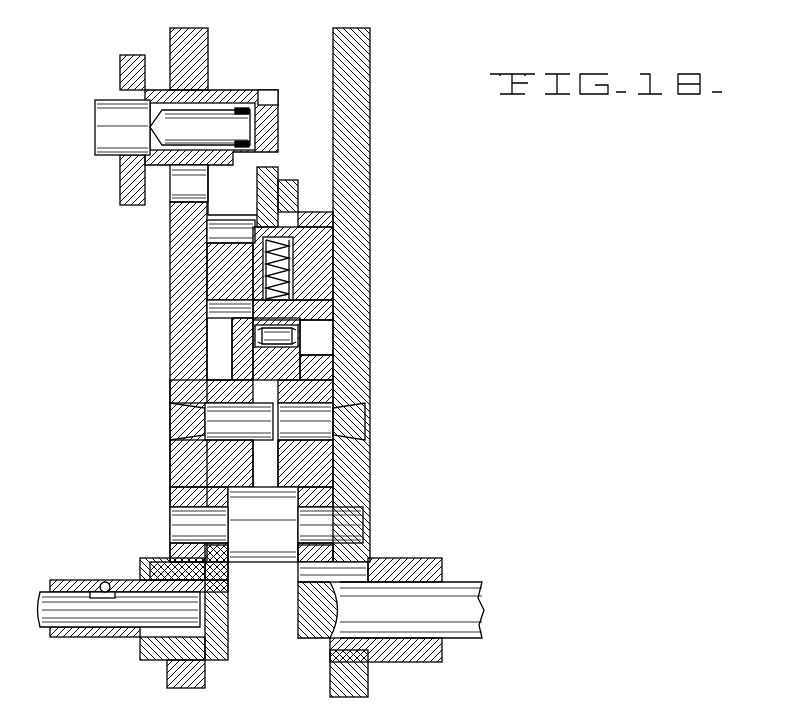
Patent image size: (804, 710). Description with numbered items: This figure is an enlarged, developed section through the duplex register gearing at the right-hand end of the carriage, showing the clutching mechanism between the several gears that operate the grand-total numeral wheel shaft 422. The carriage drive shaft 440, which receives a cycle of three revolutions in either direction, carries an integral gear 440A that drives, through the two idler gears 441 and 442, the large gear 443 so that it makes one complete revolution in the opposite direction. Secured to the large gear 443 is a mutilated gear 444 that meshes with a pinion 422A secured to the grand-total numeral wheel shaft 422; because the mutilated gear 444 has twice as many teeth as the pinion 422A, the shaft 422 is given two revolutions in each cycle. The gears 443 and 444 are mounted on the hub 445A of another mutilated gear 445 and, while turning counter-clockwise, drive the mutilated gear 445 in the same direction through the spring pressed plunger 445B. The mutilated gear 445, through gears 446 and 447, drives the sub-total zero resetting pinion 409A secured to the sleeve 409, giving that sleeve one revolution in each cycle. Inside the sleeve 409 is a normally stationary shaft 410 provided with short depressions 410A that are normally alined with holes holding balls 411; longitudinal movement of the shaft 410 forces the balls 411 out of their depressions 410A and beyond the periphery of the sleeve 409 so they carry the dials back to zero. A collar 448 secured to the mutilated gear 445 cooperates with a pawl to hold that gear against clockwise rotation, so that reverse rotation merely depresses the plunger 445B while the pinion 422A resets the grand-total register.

The grand-total numeral wheel shaft 422 is at (130, 117).
The pinion 422A is at (265, 90).
The mutilated gear 444 is at (300, 195).
The spring pressed plunger 445B is at (290, 225).
The hub 445A is at (368, 265).
The collar 448 is at (205, 316).
The mutilated gear 445 is at (232, 335).
The large gear 443 is at (300, 340).
The idler gear 442 is at (320, 384).
The gear 446 is at (200, 395).
The gear 447 is at (205, 500).
The idler gear 441 is at (330, 490).
The sleeve 409 is at (95, 580).
The ball 411 is at (105, 582).
The shaft 410 is at (50, 610).
The depressions 410A is at (105, 598).
The carriage drive shaft 440 is at (470, 603).
The gear 440A is at (315, 643).
The sub-total zero resetting pinion 409A is at (225, 650).